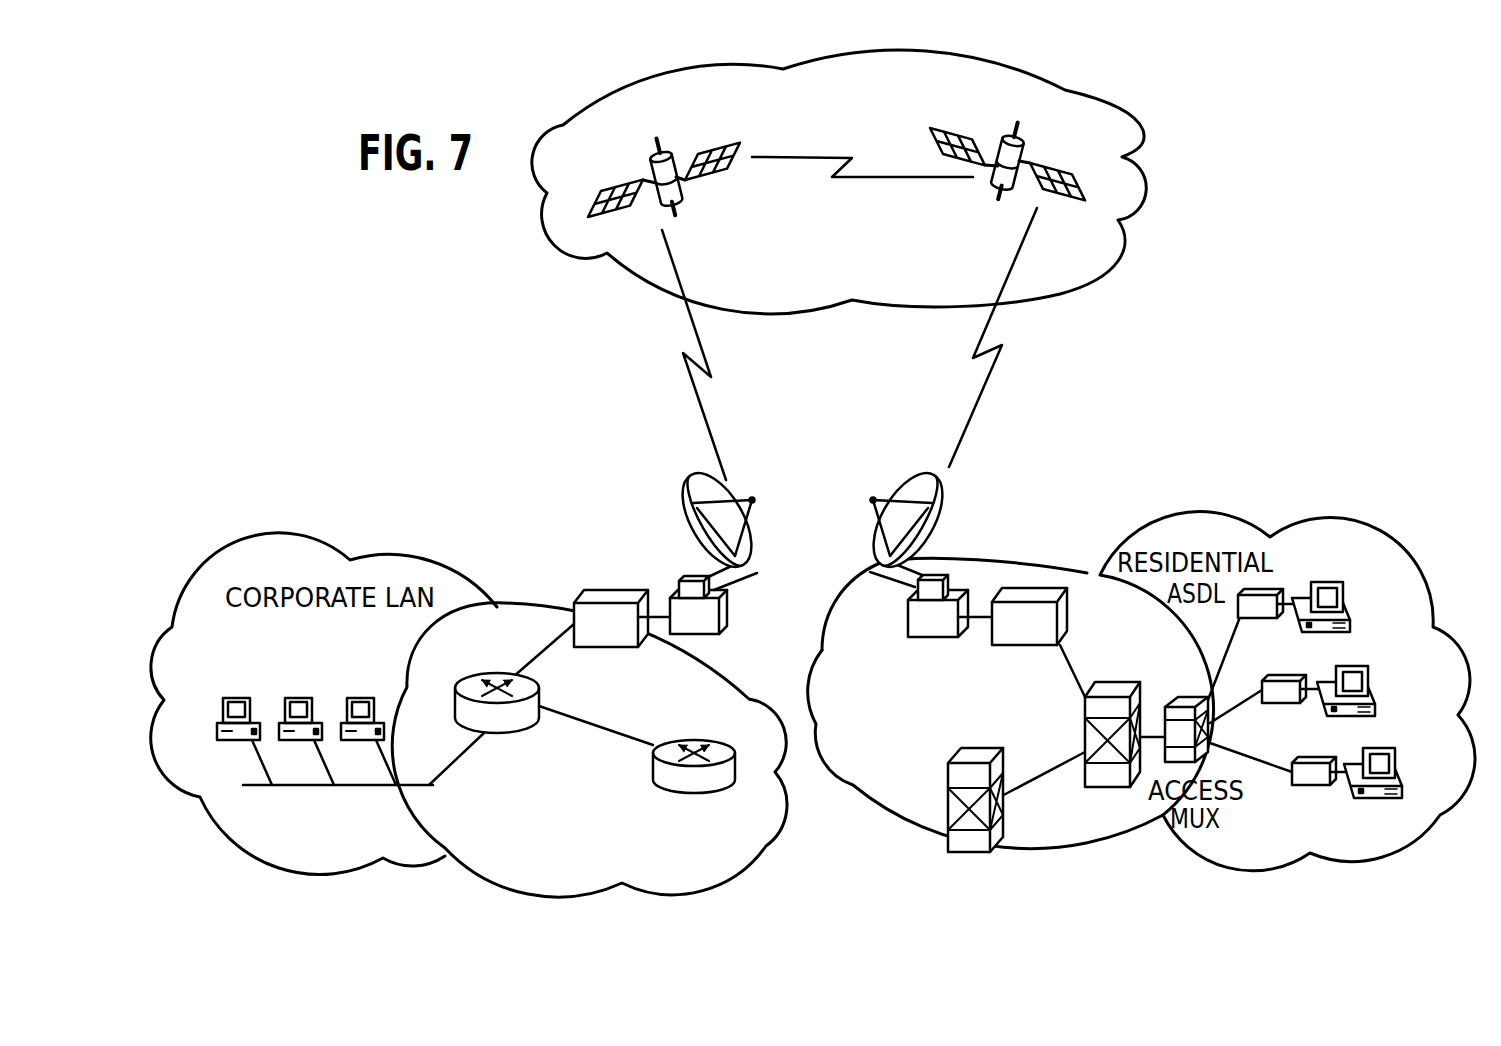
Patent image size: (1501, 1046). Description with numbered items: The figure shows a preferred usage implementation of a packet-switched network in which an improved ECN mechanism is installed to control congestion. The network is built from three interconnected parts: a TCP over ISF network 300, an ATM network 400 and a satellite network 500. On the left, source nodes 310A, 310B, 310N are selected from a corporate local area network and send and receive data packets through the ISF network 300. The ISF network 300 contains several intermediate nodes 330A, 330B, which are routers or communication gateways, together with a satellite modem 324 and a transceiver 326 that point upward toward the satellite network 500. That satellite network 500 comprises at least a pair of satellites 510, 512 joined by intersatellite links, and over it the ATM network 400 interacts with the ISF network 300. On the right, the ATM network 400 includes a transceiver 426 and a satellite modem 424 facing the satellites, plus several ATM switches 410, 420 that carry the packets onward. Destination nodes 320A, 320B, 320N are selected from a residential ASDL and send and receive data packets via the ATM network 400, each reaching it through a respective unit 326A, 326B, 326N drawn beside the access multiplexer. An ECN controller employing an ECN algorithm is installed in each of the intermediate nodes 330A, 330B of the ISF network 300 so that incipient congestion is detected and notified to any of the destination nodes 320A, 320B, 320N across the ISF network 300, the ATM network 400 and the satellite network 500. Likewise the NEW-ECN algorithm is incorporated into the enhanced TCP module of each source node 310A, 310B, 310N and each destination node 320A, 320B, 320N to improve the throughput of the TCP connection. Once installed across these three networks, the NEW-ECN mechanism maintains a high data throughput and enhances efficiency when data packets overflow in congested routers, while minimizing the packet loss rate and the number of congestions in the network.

The satellite network 500 is at (1143, 128).
The satellite 510 is at (645, 172).
The satellite 512 is at (1021, 138).
The ISF network 300 is at (762, 853).
The source node 310A is at (246, 698).
The source node 310B is at (310, 698).
The source node 310N is at (374, 698).
The intermediate node 330A is at (512, 731).
The satellite modem 324 is at (598, 648).
The transceiver 326 is at (744, 540).
The intermediate node 330B is at (688, 636).
The ATM network 400 is at (1028, 848).
The transceiver 426 is at (955, 588).
The satellite modem 424 is at (1010, 648).
The ATM switch 410 is at (1120, 692).
The ATM switch 420 is at (985, 750).
The destination node 320A is at (1323, 582).
The destination node 320B is at (1350, 667).
The destination node 320N is at (1378, 748).
The ADSL modem 326A is at (1253, 619).
The ADSL modem 326B is at (1280, 704).
The ADSL modem 326N is at (1308, 786).